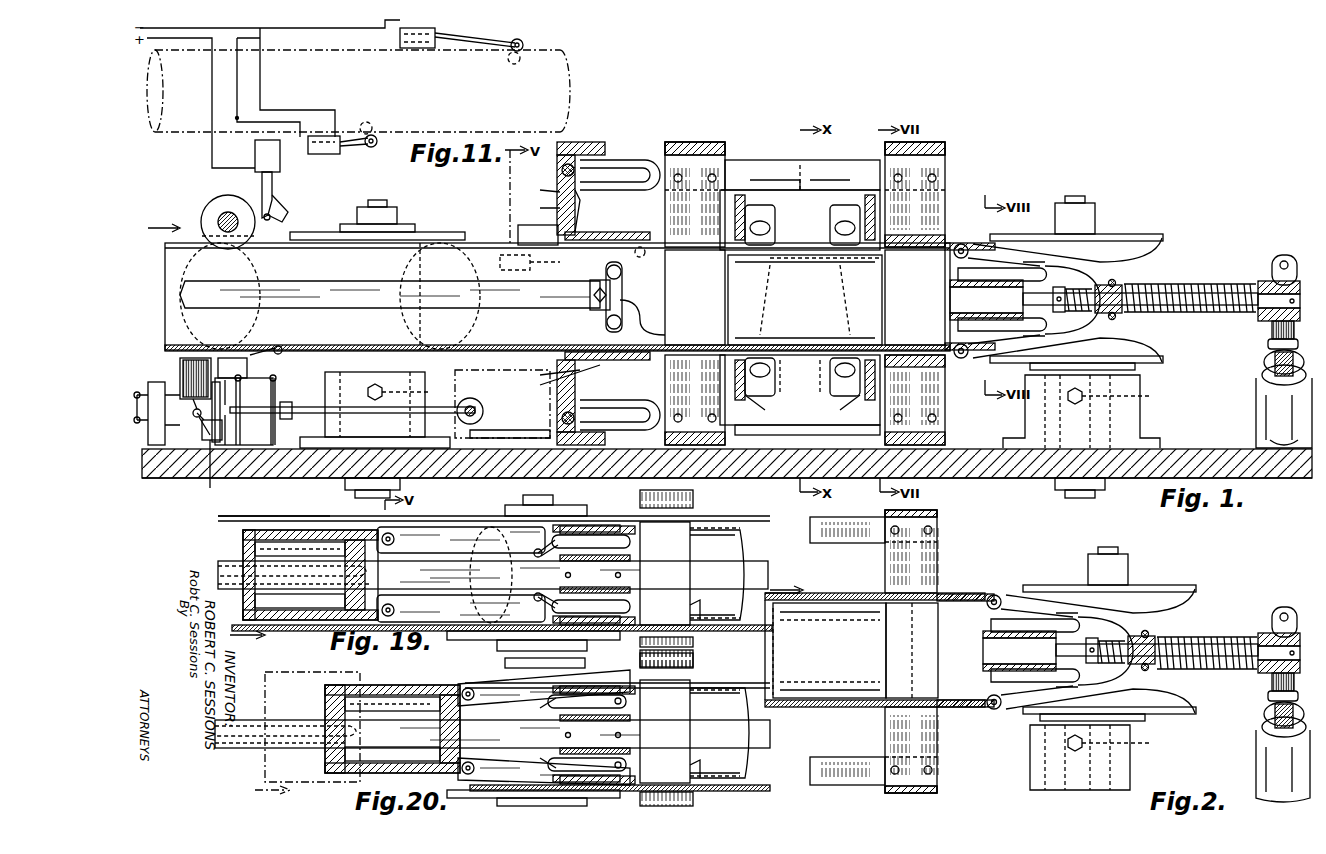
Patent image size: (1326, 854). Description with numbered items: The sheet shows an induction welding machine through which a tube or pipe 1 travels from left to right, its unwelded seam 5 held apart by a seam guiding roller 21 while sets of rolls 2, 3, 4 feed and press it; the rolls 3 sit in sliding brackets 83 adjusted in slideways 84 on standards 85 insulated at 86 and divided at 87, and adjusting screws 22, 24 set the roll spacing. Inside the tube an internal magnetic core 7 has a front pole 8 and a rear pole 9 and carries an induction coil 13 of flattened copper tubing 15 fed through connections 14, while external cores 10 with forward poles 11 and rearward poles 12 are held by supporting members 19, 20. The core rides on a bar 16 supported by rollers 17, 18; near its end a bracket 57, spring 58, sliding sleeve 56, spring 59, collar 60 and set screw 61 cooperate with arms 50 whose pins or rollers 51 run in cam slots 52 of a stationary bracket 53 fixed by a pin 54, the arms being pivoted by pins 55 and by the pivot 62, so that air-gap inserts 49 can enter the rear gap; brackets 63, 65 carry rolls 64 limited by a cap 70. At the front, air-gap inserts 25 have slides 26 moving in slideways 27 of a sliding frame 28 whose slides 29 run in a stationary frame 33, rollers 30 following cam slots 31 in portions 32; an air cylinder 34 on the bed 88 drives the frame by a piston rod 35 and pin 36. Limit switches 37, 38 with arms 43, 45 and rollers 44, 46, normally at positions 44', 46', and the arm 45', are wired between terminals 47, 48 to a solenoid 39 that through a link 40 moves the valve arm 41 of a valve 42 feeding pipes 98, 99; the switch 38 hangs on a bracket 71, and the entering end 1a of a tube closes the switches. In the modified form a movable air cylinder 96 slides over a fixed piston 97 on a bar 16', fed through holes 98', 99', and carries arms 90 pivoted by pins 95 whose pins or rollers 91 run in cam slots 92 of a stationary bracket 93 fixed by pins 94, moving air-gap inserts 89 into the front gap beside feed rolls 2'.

In FIG. 11, the tube or pipe 1 is at (560, 90).
In FIG. 1, the tube or pipe 1 is at (200, 330).
In FIG. 19, the tube or pipe 1 is at (292, 626).
In FIG. 20, the tube or pipe 1 is at (290, 790).
In FIG. 2, the tube or pipe 1 is at (828, 707).
In FIG. 20, the entering end of the tube 1a is at (360, 672).
In FIG. 1, the rolls 2 is at (392, 216).
In FIG. 19, the feed rolls 2' is at (533, 571).
In FIG. 20, the feed rolls 2' is at (533, 727).
In FIG. 1, the rolls 3 is at (862, 380).
In FIG. 1, the rolls 4 is at (1150, 258).
In FIG. 2, the rolls 4 is at (1165, 610).
In FIG. 1, the unwelded seam 5 is at (312, 232).
In FIG. 19, the unwelded seam 5 is at (300, 516).
In FIG. 2, the unwelded seam 5 is at (778, 590).
In FIG. 1, the internal magnetic core 7 is at (805, 300).
In FIG. 19, the internal magnetic core 7 is at (745, 570).
In FIG. 20, the internal magnetic core 7 is at (748, 733).
In FIG. 2, the internal magnetic core 7 is at (829, 650).
In FIG. 1, the front pole 8 is at (695, 297).
In FIG. 19, the front pole 8 is at (665, 573).
In FIG. 20, the front pole 8 is at (665, 731).
In FIG. 1, the rear pole 9 is at (915, 297).
In FIG. 2, the rear pole 9 is at (912, 650).
In FIG. 1, the external magnetic cores 10 is at (808, 448).
In FIG. 2, the external magnetic cores 10 is at (830, 782).
In FIG. 1, the forward poles 11 is at (715, 470).
In FIG. 19, the forward poles 11 is at (693, 642).
In FIG. 20, the forward poles 11 is at (693, 798).
In FIG. 1, the rearward poles 12 is at (918, 385).
In FIG. 2, the rearward poles 12 is at (940, 720).
In FIG. 1, the induction coil 13 is at (805, 360).
In FIG. 19, the induction coil 13 is at (745, 540).
In FIG. 20, the induction coil 13 is at (745, 775).
In FIG. 2, the induction coil 13 is at (805, 707).
In FIG. 1, the connections 14 is at (665, 330).
In FIG. 19, the connections 14 is at (700, 600).
In FIG. 20, the connections 14 is at (700, 760).
In FIG. 1, the flattened copper tubing 15 is at (590, 298).
In FIG. 1, the bar 16 is at (719, 294).
In FIG. 2, the bar 16 is at (1157, 632).
In FIG. 19, the bar 16' is at (493, 575).
In FIG. 20, the bar 16' is at (492, 734).
In FIG. 1, the rollers 17 is at (606, 325).
In FIG. 1, the rollers 18 is at (1262, 328).
In FIG. 2, the rollers 18 is at (1262, 680).
In FIG. 1, the supporting member 19 is at (730, 470).
In FIG. 1, the supporting member 20 is at (950, 470).
In FIG. 2, the supporting member 20 is at (950, 805).
In FIG. 1, the seam guiding roller 21 is at (213, 210).
In FIG. 1, the adjusting screw 22 is at (387, 404).
In FIG. 1, the adjusting screw 24 is at (1087, 411).
In FIG. 2, the adjusting screw 24 is at (1099, 757).
In FIG. 1, the air-gap inserts 25 is at (615, 360).
In FIG. 1, the slides 26 is at (555, 188).
In FIG. 1, the slideways 27 is at (535, 292).
In FIG. 1, the sliding frame 28 is at (510, 418).
In FIG. 1, the slides 29 is at (490, 448).
In FIG. 1, the rollers 30 is at (590, 385).
In FIG. 1, the cam slots 31 is at (640, 400).
In FIG. 1, the longitudinally extending portions 32 is at (648, 445).
In FIG. 1, the stationary frame 33 is at (600, 447).
In FIG. 1, the air cylinder 34 is at (222, 440).
In FIG. 1, the piston rod 35 is at (400, 448).
In FIG. 1, the pin 36 is at (468, 425).
In FIG. 11, the limit switch 37 is at (328, 155).
In FIG. 1, the limit switch 37 is at (240, 358).
In FIG. 11, the limit switch 38 is at (420, 49).
In FIG. 1, the limit switch 38 is at (500, 265).
In FIG. 11, the solenoid 39 is at (255, 155).
In FIG. 1, the solenoid 39 is at (185, 365).
In FIG. 11, the link 40 is at (264, 190).
In FIG. 1, the link 40 is at (193, 415).
In FIG. 11, the valve arm 41 is at (290, 195).
In FIG. 1, the valve arm 41 is at (205, 440).
In FIG. 1, the valve 42 is at (200, 475).
In FIG. 11, the arm 43 is at (360, 150).
In FIG. 1, the arm 43 is at (275, 348).
In FIG. 11, the roller 44 is at (386, 158).
In FIG. 1, the roller 44 is at (291, 360).
In FIG. 11, the broken line position 44' is at (381, 114).
In FIG. 11, the arm 45 is at (475, 32).
In FIG. 1, the arm 45' is at (545, 267).
In FIG. 11, the roller 46 is at (528, 35).
In FIG. 1, the roller 46 is at (646, 233).
In FIG. 11, the broken line position 46' is at (515, 70).
In FIG. 11, the terminal 47 is at (180, 28).
In FIG. 11, the terminal 48 is at (172, 44).
In FIG. 1, the air-gap inserts 49 is at (945, 345).
In FIG. 2, the air-gap inserts 49 is at (960, 707).
In FIG. 1, the arms 50 is at (1045, 363).
In FIG. 2, the arms 50 is at (1105, 714).
In FIG. 1, the pins or rollers 51 is at (968, 355).
In FIG. 2, the pins or rollers 51 is at (1001, 706).
In FIG. 1, the cam slots 52 is at (1010, 331).
In FIG. 2, the cam slots 52 is at (1040, 682).
In FIG. 1, the stationary bracket 53 is at (950, 300).
In FIG. 2, the stationary bracket 53 is at (1003, 651).
In FIG. 1, the pin 54 is at (986, 300).
In FIG. 2, the pin 54 is at (1019, 651).
In FIG. 1, the pins 55 is at (1116, 318).
In FIG. 2, the pins 55 is at (1149, 669).
In FIG. 1, the sliding sleeve 56 is at (1122, 292).
In FIG. 2, the sliding sleeve 56 is at (1155, 656).
In FIG. 1, the bracket 57 is at (1272, 268).
In FIG. 2, the bracket 57 is at (1272, 620).
In FIG. 1, the spring 58 is at (1195, 316).
In FIG. 2, the spring 58 is at (1215, 670).
In FIG. 1, the spring 59 is at (1062, 287).
In FIG. 2, the spring 59 is at (1095, 638).
In FIG. 1, the collar 60 is at (1072, 312).
In FIG. 2, the collar 60 is at (1105, 664).
In FIG. 1, the set screw 61 is at (1085, 280).
In FIG. 2, the set screw 61 is at (1085, 640).
In FIG. 1, the pivot pin 62 is at (960, 358).
In FIG. 2, the pivot pin 62 is at (994, 710).
In FIG. 1, the brackets 63 is at (1260, 425).
In FIG. 2, the brackets 63 is at (1260, 774).
In FIG. 1, the rolls 64 is at (1268, 345).
In FIG. 2, the rolls 64 is at (1268, 697).
In FIG. 1, the brackets 65 is at (1268, 368).
In FIG. 2, the brackets 65 is at (1268, 720).
In FIG. 1, the cap 70 is at (1268, 385).
In FIG. 2, the cap 70 is at (1268, 740).
In FIG. 1, the bracket 71 is at (518, 232).
In FIG. 1, the sliding brackets 83 is at (802, 295).
In FIG. 1, the slideways 84 is at (875, 390).
In FIG. 1, the standards 85 is at (858, 470).
In FIG. 1, the insulation 86 is at (858, 470).
In FIG. 1, the insulation 87 is at (800, 381).
In FIG. 1, the bed 88 is at (1020, 480).
In FIG. 19, the air-gap inserts 89 is at (590, 626).
In FIG. 20, the air-gap inserts 89 is at (640, 785).
In FIG. 19, the arms 90 is at (425, 622).
In FIG. 20, the arms 90 is at (470, 782).
In FIG. 19, the pins or rollers 91 is at (540, 600).
In FIG. 20, the pins or rollers 91 is at (628, 766).
In FIG. 19, the cam slots 92 is at (630, 618).
In FIG. 20, the cam slots 92 is at (580, 790).
In FIG. 19, the stationary bracket 93 is at (635, 555).
In FIG. 20, the stationary bracket 93 is at (635, 716).
In FIG. 19, the pins 94 is at (593, 575).
In FIG. 20, the pins 94 is at (593, 735).
In FIG. 19, the pins 95 is at (392, 606).
In FIG. 20, the pins 95 is at (474, 765).
In FIG. 19, the movable air cylinder 96 is at (320, 530).
In FIG. 20, the movable air cylinder 96 is at (425, 678).
In FIG. 19, the fixed piston 97 is at (300, 575).
In FIG. 20, the fixed piston 97 is at (392, 727).
In FIG. 1, the pipe 98 is at (157, 441).
In FIG. 19, the hole 98' is at (276, 566).
In FIG. 20, the hole 98' is at (280, 758).
In FIG. 1, the pipe 99 is at (228, 440).
In FIG. 19, the hole 99' is at (275, 552).
In FIG. 20, the hole 99' is at (285, 711).